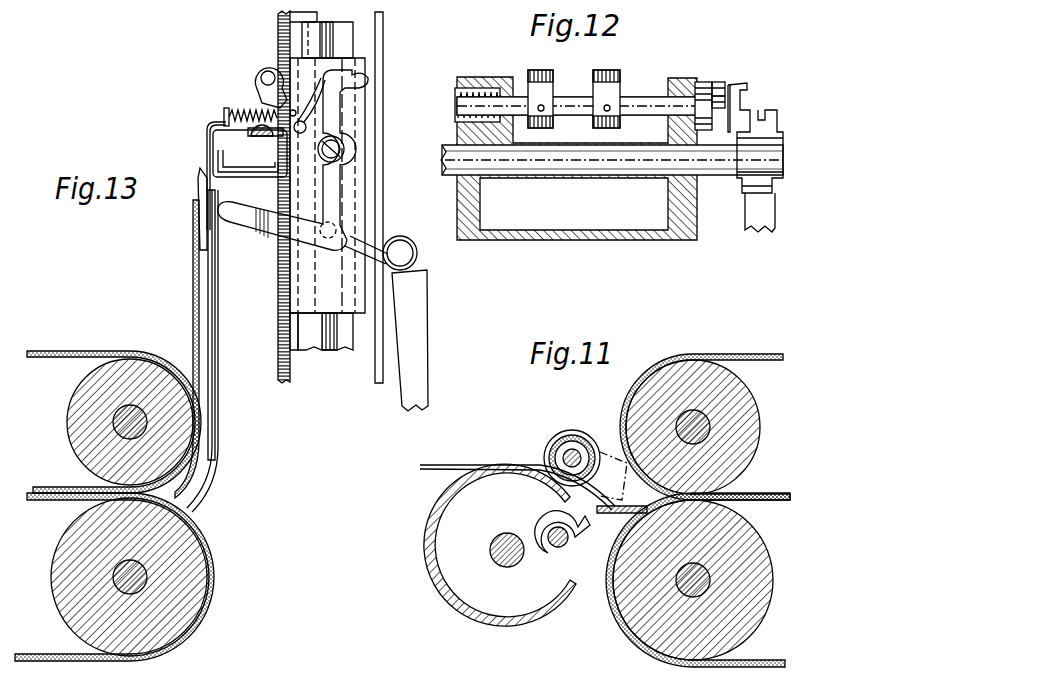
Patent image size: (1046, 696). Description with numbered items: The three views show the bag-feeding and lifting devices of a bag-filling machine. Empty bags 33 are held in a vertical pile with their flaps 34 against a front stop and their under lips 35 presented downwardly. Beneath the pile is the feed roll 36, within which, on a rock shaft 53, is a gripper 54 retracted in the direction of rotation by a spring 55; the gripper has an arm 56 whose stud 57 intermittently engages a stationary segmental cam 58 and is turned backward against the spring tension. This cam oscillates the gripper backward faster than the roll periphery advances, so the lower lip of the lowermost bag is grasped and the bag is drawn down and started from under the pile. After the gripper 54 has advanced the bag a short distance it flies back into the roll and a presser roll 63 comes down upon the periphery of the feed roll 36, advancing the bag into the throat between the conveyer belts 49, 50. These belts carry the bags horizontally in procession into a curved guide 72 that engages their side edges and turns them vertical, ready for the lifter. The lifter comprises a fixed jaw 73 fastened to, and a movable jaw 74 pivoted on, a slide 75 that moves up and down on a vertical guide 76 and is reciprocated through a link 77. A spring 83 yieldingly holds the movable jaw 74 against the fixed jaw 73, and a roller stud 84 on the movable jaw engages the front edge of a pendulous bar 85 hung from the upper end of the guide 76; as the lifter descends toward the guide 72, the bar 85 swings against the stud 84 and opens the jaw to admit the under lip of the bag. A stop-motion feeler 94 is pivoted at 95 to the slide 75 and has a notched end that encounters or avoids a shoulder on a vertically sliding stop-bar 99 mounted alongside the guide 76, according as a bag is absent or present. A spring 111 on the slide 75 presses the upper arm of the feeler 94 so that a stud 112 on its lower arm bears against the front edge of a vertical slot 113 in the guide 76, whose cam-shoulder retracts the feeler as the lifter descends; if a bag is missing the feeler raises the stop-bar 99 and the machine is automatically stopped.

In FIG. 13, the bag 33 is at (200, 320).
In FIG. 11, the bag 33 is at (468, 466).
In FIG. 13, the flap 34 is at (197, 221).
In FIG. 13, the under lip 35 is at (214, 240).
In FIG. 12, the feed roll 36 is at (632, 222).
In FIG. 11, the feed roll 36 is at (437, 565).
In FIG. 13, the conveyer belt 49 is at (40, 651).
In FIG. 11, the conveyer belt 49 is at (770, 668).
In FIG. 13, the conveyer belt 50 is at (36, 356).
In FIG. 11, the conveyer belt 50 is at (766, 356).
In FIG. 12, the rock shaft 53 is at (645, 96).
In FIG. 12, the gripper 54 is at (597, 72).
In FIG. 11, the gripper 54 is at (600, 542).
In FIG. 12, the spring 55 is at (457, 100).
In FIG. 12, the arm 56 is at (702, 82).
In FIG. 12, the stud 57 is at (722, 82).
In FIG. 12, the segmental cam 58 is at (748, 88).
In FIG. 11, the presser roll 63 is at (566, 432).
In FIG. 13, the curved guide 72 is at (217, 468).
In FIG. 13, the fixed jaw 73 is at (243, 171).
In FIG. 13, the movable jaw 74 is at (205, 150).
In FIG. 13, the slide 75 is at (358, 247).
In FIG. 13, the vertical guide 76 is at (343, 356).
In FIG. 13, the link 77 is at (414, 345).
In FIG. 13, the spring 83 is at (245, 108).
In FIG. 13, the roller stud 84 is at (266, 142).
In FIG. 13, the pendulous bar 85 is at (289, 384).
In FIG. 13, the feeler 94 is at (330, 190).
In FIG. 13, the pivot 95 is at (346, 148).
In FIG. 13, the stop-bar 99 is at (384, 48).
In FIG. 13, the spring 111 is at (313, 97).
In FIG. 13, the stud 112 is at (396, 288).
In FIG. 13, the vertical slot 113 is at (328, 333).